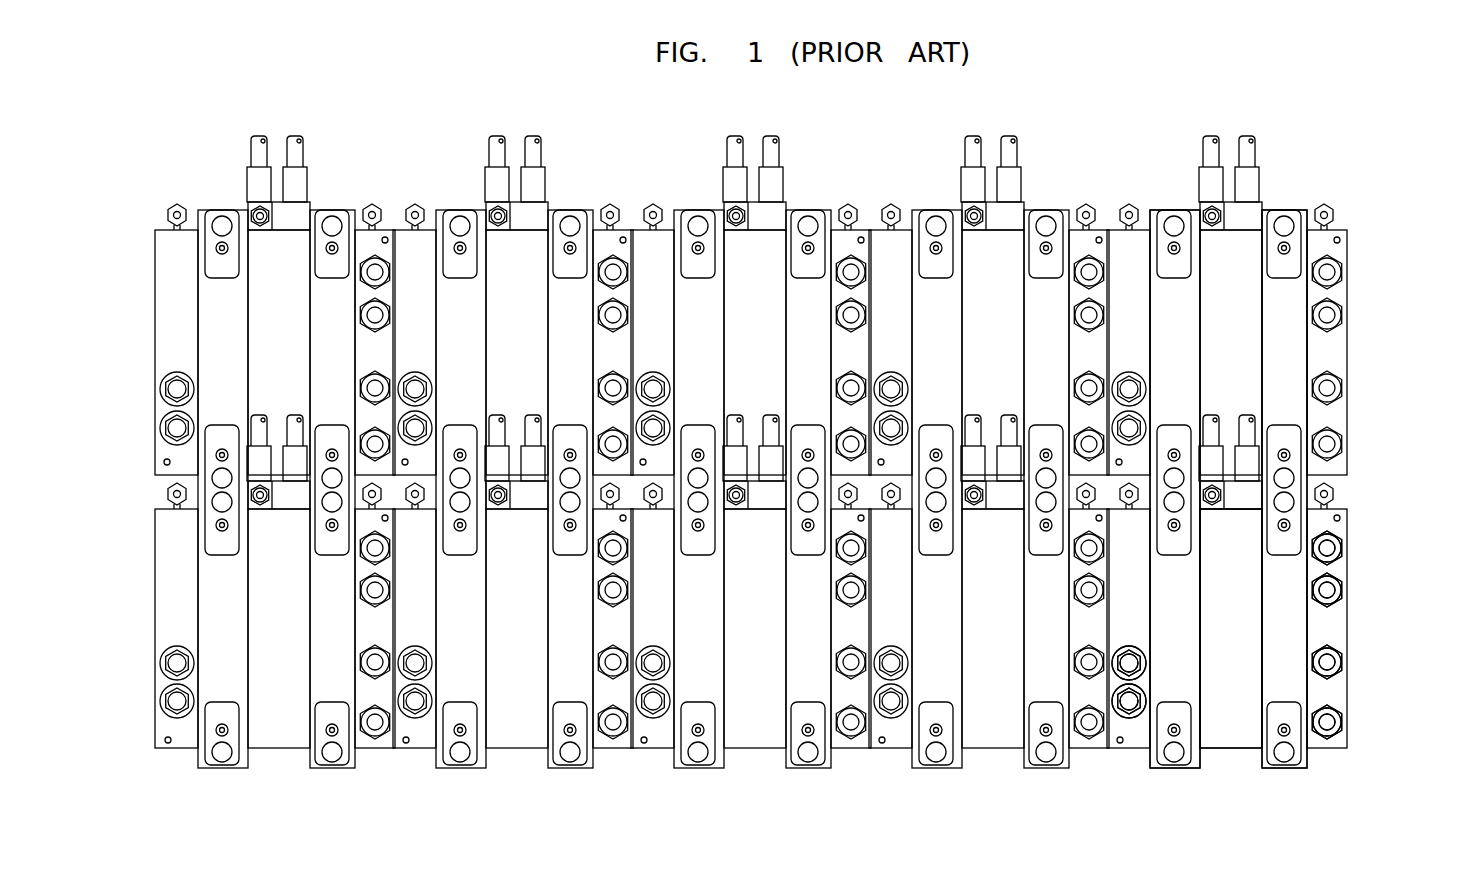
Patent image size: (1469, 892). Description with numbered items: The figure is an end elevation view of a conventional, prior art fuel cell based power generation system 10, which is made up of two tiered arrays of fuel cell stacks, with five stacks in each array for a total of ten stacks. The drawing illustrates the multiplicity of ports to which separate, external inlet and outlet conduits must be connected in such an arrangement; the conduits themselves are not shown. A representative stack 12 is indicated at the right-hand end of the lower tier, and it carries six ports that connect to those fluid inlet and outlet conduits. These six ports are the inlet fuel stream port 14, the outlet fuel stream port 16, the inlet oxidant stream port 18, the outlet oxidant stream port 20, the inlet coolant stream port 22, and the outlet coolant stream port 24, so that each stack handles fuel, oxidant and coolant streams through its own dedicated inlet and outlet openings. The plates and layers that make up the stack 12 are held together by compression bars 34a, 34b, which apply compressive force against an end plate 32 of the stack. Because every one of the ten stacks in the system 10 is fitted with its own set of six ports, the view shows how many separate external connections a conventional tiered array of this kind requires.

The fuel cell based power generation system 10 is at (1307, 153).
The representative stack 12 is at (1350, 775).
The inlet fuel stream port 14 is at (1132, 690).
The outlet fuel stream port 16 is at (1132, 658).
The inlet oxidant stream port 18 is at (1332, 668).
The outlet oxidant stream port 20 is at (1332, 724).
The inlet coolant stream port 22 is at (1330, 548).
The outlet coolant stream port 24 is at (1332, 587).
The end plate 32 is at (1233, 585).
The compression bar 34a is at (1292, 565).
The compression bar 34b is at (1163, 612).